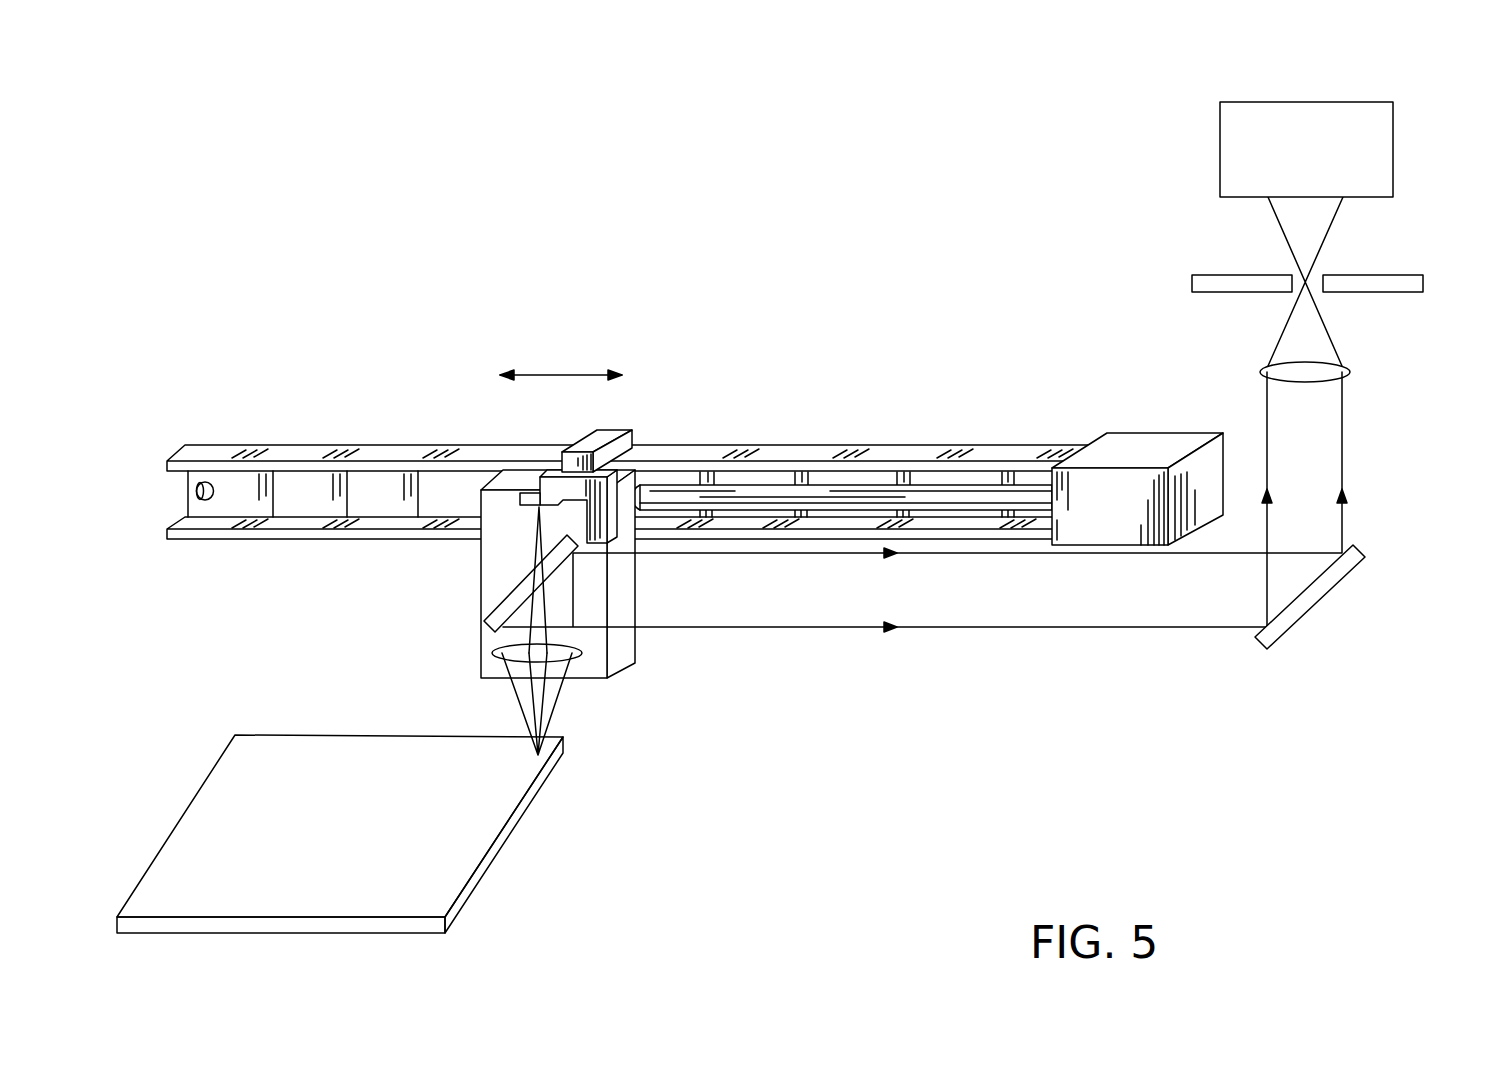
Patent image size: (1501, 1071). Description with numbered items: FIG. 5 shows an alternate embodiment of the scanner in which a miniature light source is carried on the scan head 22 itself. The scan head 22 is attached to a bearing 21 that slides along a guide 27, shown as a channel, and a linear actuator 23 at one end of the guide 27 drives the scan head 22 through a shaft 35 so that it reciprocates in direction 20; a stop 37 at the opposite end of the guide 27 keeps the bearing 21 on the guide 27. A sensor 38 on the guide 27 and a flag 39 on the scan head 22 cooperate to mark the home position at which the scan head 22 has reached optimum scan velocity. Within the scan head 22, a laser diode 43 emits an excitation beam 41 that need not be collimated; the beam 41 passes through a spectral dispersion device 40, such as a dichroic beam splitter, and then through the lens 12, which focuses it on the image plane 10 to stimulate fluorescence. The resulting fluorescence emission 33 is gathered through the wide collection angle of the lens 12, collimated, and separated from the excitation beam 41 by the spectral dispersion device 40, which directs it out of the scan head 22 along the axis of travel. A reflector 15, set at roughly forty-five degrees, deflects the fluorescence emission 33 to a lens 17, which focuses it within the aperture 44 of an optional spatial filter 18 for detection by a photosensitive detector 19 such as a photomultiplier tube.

The image plane 10 is at (258, 740).
The lens 12 is at (609, 655).
The reflector 15 is at (1285, 638).
The lens 17 is at (1258, 374).
The spatial filter 18 is at (1192, 284).
The photosensitive detector 19 is at (1220, 148).
The direction 20 is at (560, 372).
The bearing 21 is at (647, 478).
The scan head 22 is at (495, 653).
The linear actuator 23 is at (1157, 450).
The guide 27 is at (299, 452).
The fluorescence emission 33 is at (1344, 466).
The shaft 35 is at (830, 493).
The stop 37 is at (195, 492).
The sensor 38 is at (626, 441).
The flag 39 is at (542, 478).
The spectral dispersion device 40 is at (498, 597).
The excitation beam 41 is at (530, 549).
The laser diode 43 is at (529, 496).
The aperture 44 is at (1330, 308).